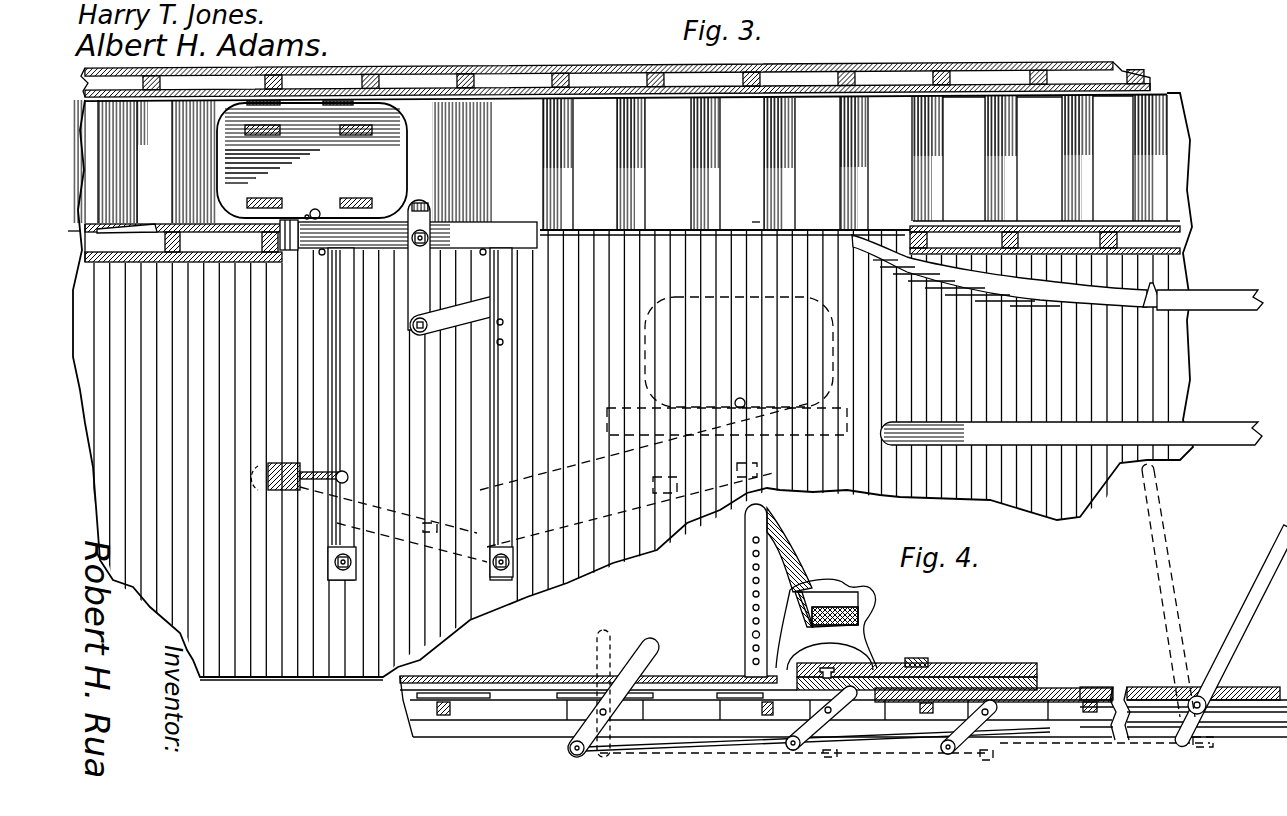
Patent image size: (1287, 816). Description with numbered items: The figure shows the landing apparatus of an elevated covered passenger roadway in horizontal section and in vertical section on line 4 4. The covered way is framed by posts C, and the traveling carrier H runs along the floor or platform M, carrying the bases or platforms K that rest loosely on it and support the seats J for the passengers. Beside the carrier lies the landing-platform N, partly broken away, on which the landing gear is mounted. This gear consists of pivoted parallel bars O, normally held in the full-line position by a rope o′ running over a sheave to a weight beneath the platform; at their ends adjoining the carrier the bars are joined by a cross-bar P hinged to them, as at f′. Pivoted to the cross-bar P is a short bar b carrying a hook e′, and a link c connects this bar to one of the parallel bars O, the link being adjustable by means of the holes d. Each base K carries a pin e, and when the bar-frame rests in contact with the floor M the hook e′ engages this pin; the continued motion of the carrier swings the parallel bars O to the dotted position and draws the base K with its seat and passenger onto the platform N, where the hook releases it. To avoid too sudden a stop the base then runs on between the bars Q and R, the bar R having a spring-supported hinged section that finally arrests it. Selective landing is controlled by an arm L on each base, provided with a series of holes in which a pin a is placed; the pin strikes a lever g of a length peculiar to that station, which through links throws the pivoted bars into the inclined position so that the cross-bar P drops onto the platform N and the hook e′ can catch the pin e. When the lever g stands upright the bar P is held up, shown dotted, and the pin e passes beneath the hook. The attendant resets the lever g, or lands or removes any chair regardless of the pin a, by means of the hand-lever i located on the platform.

In FIG. 3, the posts C is at (635, 151).
In FIG. 3, the platform or floor M is at (620, 165).
In FIG. 3, the carrier H is at (937, 162).
In FIG. 3, the landing-platform N is at (633, 396).
In FIG. 3, the base or platform K is at (312, 159).
In FIG. 3, the cross-bar P is at (417, 235).
In FIG. 4, the cross-bar P is at (954, 673).
In FIG. 3, the arm L is at (289, 219).
In FIG. 4, the arm L is at (744, 595).
In FIG. 3, the pin a is at (305, 216).
In FIG. 4, the pin a is at (751, 636).
In FIG. 3, the pin e is at (319, 206).
In FIG. 4, the pin e is at (827, 662).
In FIG. 3, the hook e′ is at (430, 209).
In FIG. 3, the bar b is at (419, 265).
In FIG. 3, the link c is at (459, 315).
In FIG. 3, the holes d is at (505, 325).
In FIG. 3, the hinge f′ is at (321, 256).
In FIG. 3, the lever g is at (127, 219).
In FIG. 4, the lever g is at (618, 693).
In FIG. 3, the pivoted parallel bars O is at (420, 414).
In FIG. 3, the rope o′ is at (303, 474).
In FIG. 3, the bar Q is at (1072, 433).
In FIG. 3, the bar R is at (1007, 271).
In FIG. 3, the section line 4 is at (409, 227).
In FIG. 4, the seat J is at (822, 589).
In FIG. 4, the lever h is at (891, 731).
In FIG. 4, the hand-lever i is at (1214, 605).
In FIG. 4, the catch p is at (916, 655).